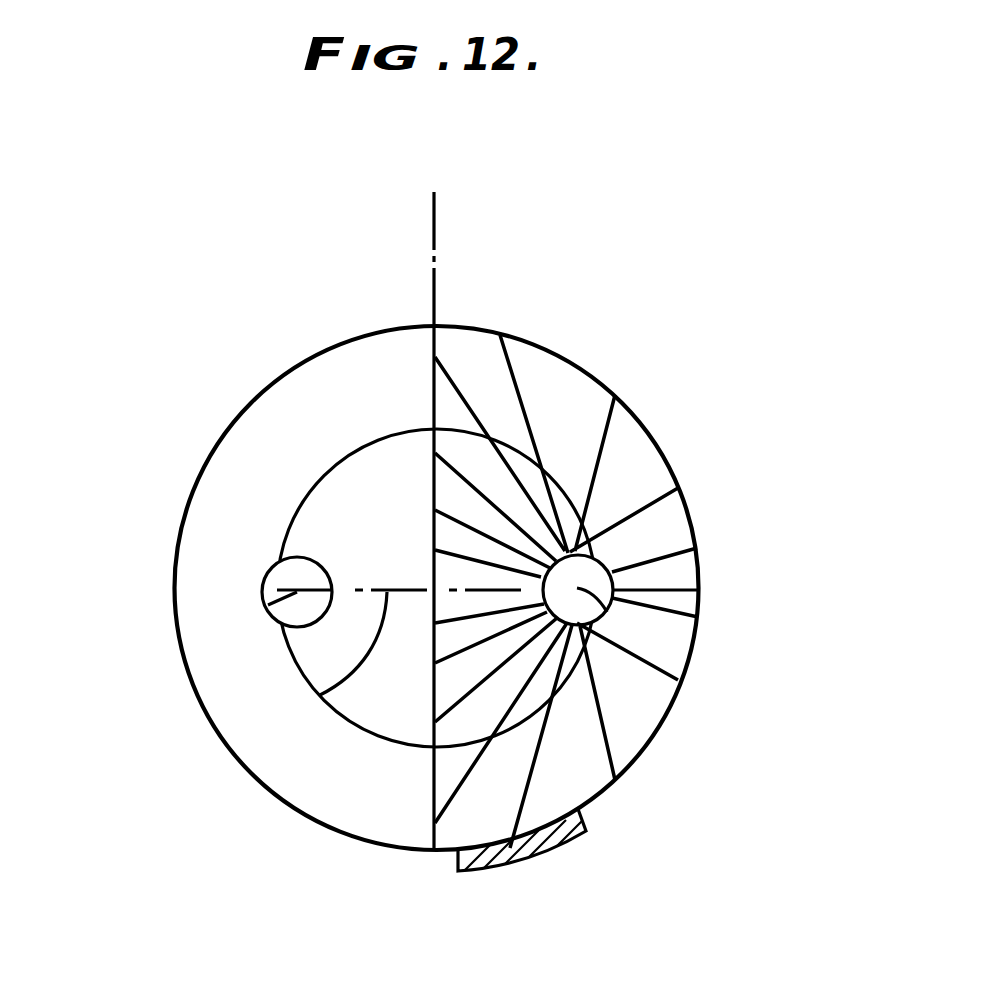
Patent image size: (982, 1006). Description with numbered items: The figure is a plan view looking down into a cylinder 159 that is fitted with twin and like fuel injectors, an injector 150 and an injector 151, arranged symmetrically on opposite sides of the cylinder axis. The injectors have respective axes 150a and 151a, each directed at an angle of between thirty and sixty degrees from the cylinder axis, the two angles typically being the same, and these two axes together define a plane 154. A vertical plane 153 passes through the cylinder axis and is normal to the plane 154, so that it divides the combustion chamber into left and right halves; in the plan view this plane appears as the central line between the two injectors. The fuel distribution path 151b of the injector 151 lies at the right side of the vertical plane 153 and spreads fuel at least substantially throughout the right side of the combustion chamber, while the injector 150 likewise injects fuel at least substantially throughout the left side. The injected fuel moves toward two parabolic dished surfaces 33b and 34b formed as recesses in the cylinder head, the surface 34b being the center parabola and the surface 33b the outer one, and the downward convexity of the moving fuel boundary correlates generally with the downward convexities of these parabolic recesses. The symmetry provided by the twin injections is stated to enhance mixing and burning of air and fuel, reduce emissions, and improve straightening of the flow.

The vertical plane 153 is at (432, 213).
The parabolic dished surface 33b is at (280, 773).
The parabolic dished surface 34b is at (317, 481).
The fuel injector 150 is at (270, 569).
The injector axis 150a is at (268, 605).
The plane defined by the two injector axes 154 is at (318, 696).
The fuel injector 151 is at (612, 580).
The injected fuel flow path 151b is at (658, 559).
The injector axis 151a is at (607, 612).
The cylinder 159 is at (603, 803).